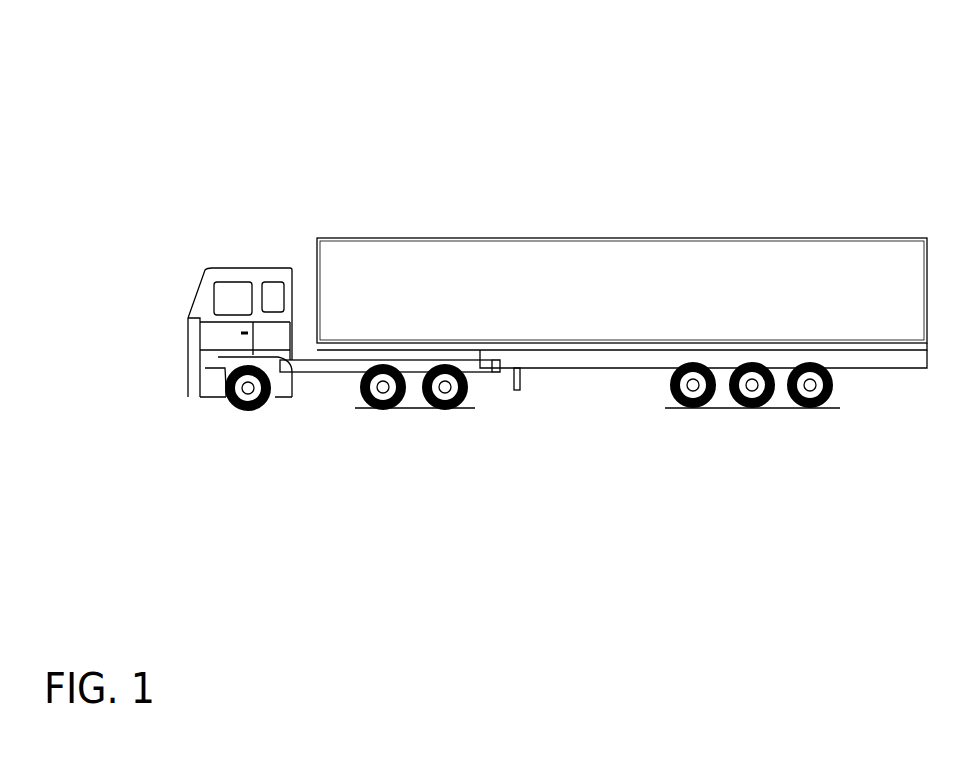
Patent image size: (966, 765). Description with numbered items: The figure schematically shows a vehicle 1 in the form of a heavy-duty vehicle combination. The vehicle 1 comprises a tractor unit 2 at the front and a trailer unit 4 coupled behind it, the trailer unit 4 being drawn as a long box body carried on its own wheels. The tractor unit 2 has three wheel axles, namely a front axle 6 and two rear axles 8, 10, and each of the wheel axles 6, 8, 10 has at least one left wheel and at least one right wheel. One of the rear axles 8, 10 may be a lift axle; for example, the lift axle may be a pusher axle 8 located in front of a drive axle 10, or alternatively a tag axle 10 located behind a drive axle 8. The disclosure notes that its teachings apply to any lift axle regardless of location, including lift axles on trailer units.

The vehicle 1 is at (212, 106).
The tractor unit 2 is at (241, 270).
The trailer unit 4 is at (612, 238).
The front axle 6 is at (246, 405).
The rear axle 8 is at (383, 405).
The rear axle 10 is at (440, 405).